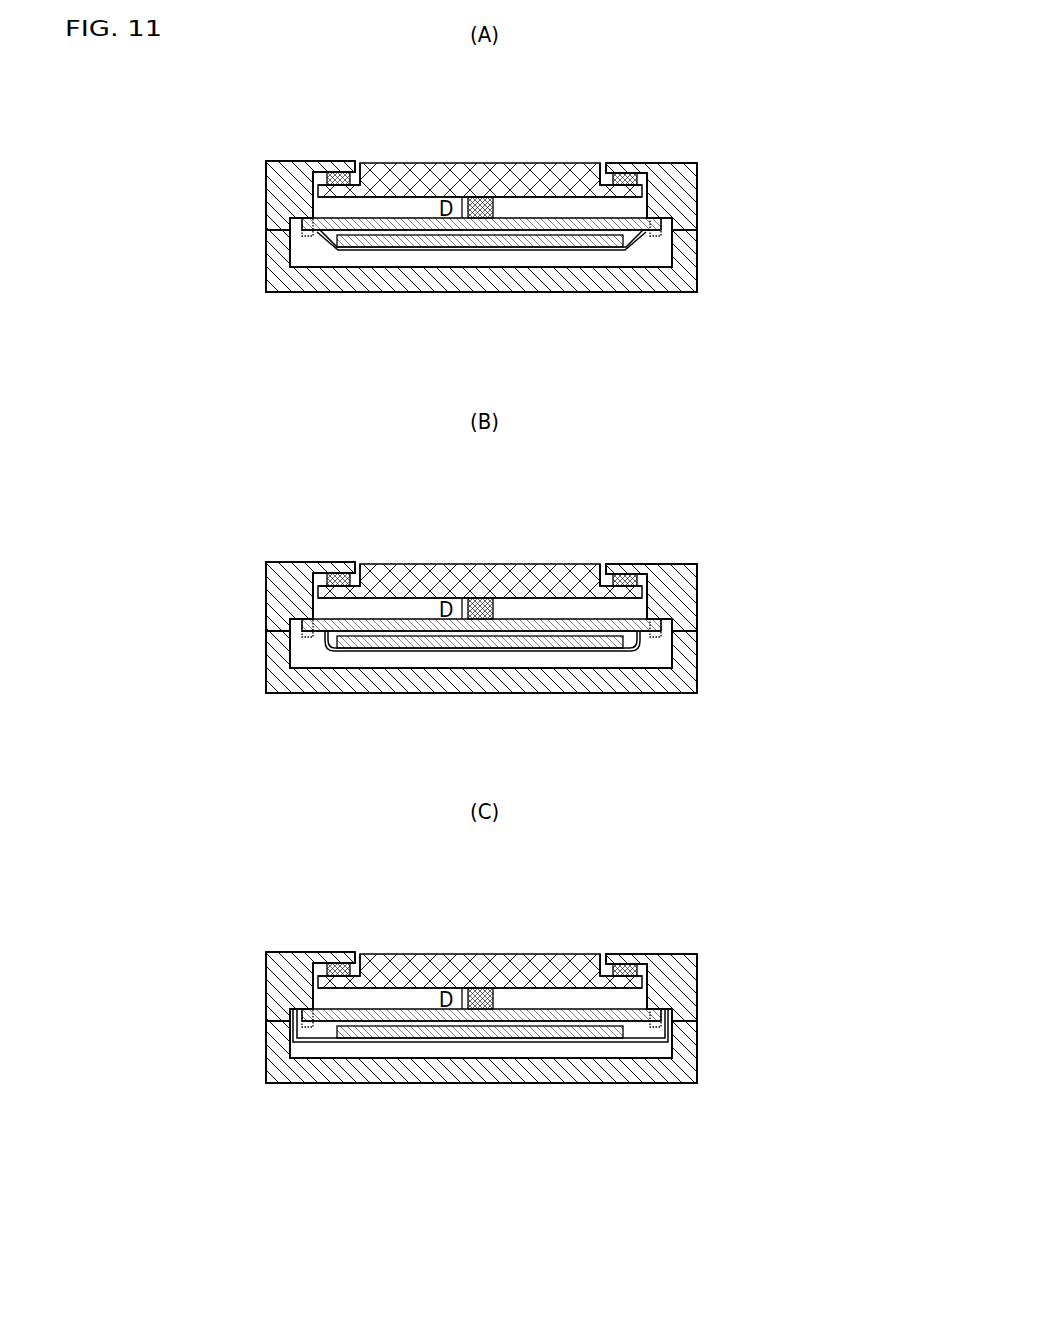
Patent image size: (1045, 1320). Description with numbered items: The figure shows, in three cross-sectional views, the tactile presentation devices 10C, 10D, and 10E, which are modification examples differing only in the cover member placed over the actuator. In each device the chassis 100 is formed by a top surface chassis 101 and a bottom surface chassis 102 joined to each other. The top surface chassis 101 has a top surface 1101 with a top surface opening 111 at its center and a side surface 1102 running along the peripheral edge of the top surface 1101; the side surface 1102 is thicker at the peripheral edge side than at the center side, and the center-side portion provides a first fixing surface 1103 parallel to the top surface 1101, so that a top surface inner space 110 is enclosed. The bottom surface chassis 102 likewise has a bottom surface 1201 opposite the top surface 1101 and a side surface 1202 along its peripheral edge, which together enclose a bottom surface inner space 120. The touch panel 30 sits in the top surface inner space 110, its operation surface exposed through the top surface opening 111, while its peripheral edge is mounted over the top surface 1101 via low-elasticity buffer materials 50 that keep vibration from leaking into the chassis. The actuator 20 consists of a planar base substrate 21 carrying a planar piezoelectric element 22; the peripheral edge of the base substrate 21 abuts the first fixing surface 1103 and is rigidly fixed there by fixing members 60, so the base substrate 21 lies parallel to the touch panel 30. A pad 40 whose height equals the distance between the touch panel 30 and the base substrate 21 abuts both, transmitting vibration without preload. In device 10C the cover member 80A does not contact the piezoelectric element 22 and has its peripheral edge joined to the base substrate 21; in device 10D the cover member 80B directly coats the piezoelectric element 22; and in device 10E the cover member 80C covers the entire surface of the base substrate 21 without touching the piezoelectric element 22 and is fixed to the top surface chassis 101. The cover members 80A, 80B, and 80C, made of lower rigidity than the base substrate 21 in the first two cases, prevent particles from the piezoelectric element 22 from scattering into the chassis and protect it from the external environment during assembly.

The tactile presentation device 10C is at (726, 77).
The tactile presentation device 10D is at (726, 478).
The tactile presentation device 10E is at (726, 868).
The chassis 100 is at (745, 130).
The top surface chassis 101 is at (719, 163).
The bottom surface chassis 102 is at (731, 296).
The top surface inner space 110 is at (409, 190).
The top surface opening 111 is at (595, 149).
The top surface 1101 is at (641, 178).
The side surface 1102 is at (697, 191).
The first fixing surface 1103 is at (684, 217).
The bottom surface inner space 120 is at (586, 280).
The bottom surface 1201 is at (673, 262).
The side surface 1202 is at (689, 272).
The actuator 20 is at (444, 337).
The base substrate 21 is at (458, 232).
The piezoelectric element 22 is at (426, 249).
The touch panel 30 is at (462, 197).
The pad 40 is at (485, 197).
The buffer materials 50 is at (331, 172).
The fixing members 60 is at (306, 238).
The cover member 80A is at (352, 252).
The cover member 80B is at (352, 653).
The cover member 80C is at (352, 1043).